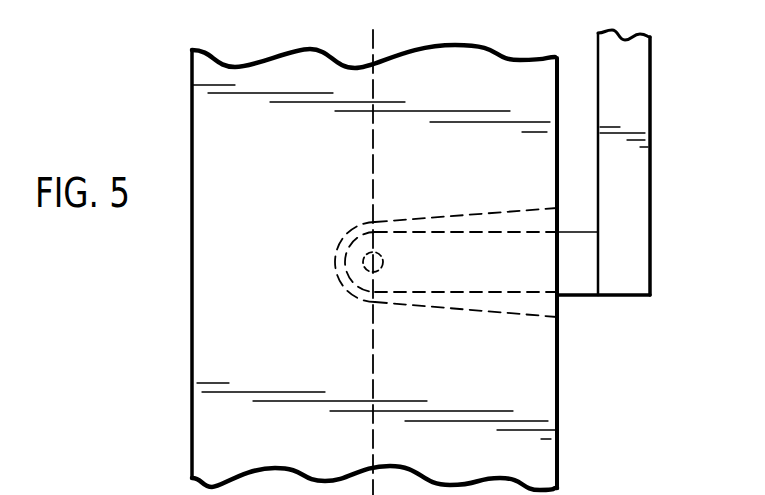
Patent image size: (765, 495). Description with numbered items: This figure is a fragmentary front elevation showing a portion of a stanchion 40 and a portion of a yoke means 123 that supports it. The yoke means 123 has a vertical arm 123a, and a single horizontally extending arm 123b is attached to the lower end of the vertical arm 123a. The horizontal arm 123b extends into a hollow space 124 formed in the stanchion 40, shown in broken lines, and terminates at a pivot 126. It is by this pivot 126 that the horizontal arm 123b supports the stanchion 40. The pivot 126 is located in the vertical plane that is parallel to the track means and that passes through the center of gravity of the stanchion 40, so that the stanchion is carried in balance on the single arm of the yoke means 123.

The stanchion 40 is at (208, 227).
The yoke means 123 is at (655, 77).
The vertical arm 123a is at (650, 172).
The horizontal arm 123b is at (575, 283).
The hollow space 124 is at (493, 216).
The pivot 126 is at (360, 271).